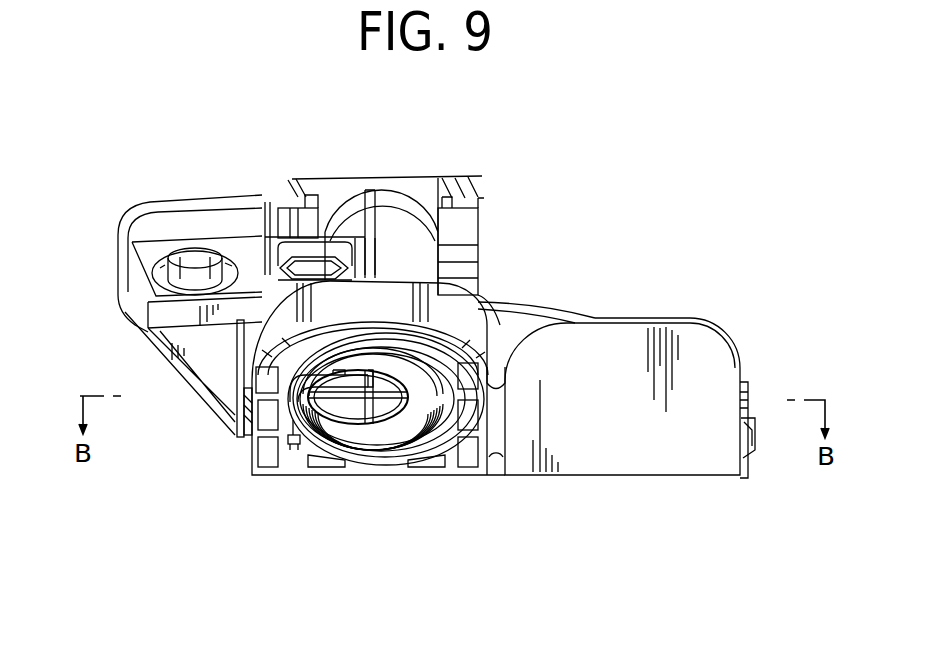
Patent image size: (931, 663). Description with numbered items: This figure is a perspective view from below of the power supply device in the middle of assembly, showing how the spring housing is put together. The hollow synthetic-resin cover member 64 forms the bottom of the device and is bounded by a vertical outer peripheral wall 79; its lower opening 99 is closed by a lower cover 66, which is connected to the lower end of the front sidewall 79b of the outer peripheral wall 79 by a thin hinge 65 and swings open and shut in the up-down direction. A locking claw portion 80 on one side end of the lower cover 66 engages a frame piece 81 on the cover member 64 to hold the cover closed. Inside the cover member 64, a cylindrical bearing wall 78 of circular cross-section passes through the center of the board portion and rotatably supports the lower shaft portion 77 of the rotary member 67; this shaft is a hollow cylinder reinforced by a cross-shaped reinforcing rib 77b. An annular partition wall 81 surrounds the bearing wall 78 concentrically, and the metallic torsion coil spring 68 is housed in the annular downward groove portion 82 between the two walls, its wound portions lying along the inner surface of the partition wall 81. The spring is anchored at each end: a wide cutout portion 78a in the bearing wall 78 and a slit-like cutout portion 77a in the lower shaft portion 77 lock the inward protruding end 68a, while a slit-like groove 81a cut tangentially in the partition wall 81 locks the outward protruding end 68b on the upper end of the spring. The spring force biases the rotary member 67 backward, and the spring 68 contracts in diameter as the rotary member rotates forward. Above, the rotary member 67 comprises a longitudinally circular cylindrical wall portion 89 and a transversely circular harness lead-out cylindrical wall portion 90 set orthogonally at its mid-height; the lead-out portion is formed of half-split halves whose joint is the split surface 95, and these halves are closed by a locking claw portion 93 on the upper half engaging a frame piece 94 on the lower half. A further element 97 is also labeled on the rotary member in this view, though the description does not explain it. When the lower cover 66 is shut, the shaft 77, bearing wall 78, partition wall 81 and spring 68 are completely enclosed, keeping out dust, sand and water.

The cover member 64 is at (248, 479).
The thin hinge 65 is at (494, 456).
The lower cover 66 is at (626, 478).
The rotary member 67 is at (441, 259).
The torsion coil spring 68 is at (423, 452).
The inward protruding end 68a is at (365, 413).
The outward protruding end 68b is at (284, 433).
The lower shaft portion 77 is at (372, 457).
The slit-like cutout portion 77a is at (292, 380).
The reinforcing rib 77b is at (352, 447).
The cylindrical bearing wall 78 is at (384, 432).
The cutout portion 78a is at (318, 425).
The outer peripheral wall 79 is at (467, 313).
The front sidewall 79b is at (590, 317).
The locking claw portion 80 is at (750, 455).
The annular partition wall 81 is at (447, 453).
The slit-like groove 81a is at (295, 446).
The annular downward groove portion 82 is at (432, 378).
The cylindrical wall portion 89 is at (414, 242).
The cylindrical wall portion 90 is at (258, 275).
The locking claw portion 93 is at (280, 223).
The frame piece 94 is at (312, 270).
The split surface 95 is at (382, 188).
The post 97 is at (412, 198).
The lower opening 99 is at (457, 460).